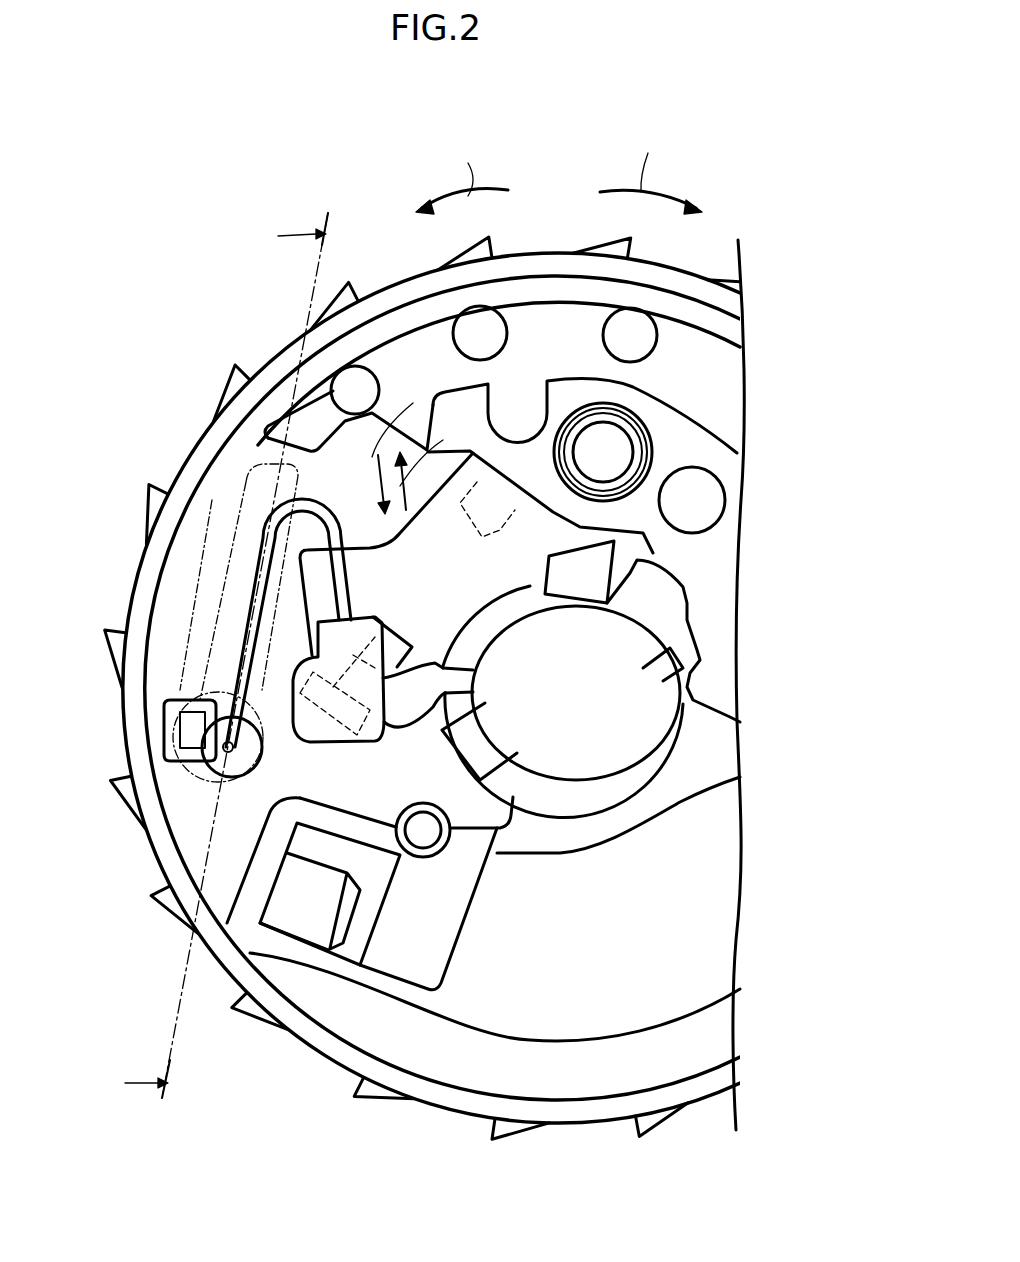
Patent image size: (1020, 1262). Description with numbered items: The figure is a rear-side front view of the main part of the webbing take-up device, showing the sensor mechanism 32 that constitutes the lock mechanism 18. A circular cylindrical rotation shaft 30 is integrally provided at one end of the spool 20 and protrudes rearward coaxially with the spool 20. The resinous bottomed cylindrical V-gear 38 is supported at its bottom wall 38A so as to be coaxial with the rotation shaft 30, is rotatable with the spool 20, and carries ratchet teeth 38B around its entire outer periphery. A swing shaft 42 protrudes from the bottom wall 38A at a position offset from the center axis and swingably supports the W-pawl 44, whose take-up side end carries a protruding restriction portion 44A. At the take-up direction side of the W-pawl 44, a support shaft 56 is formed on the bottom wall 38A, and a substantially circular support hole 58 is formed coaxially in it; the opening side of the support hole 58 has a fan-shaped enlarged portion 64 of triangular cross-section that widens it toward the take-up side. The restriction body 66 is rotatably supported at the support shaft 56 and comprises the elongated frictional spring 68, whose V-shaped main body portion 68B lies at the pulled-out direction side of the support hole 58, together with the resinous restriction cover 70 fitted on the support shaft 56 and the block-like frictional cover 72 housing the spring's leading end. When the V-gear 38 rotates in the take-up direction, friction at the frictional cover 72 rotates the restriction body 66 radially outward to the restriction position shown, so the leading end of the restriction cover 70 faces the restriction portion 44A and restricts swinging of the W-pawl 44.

The sensor mechanism 32 is at (450, 614).
The lock mechanism 18 is at (450, 614).
The rotation shaft 30 is at (553, 685).
The spool 20 is at (605, 739).
The V-gear 38 is at (436, 652).
The bottom wall 38A is at (232, 460).
The ratchet teeth 38B is at (352, 280).
The swing shaft 42 is at (617, 452).
The W-pawl 44 is at (476, 426).
The restriction portion 44A is at (277, 418).
The support shaft 56 is at (300, 746).
The support hole 58 is at (237, 750).
The enlarged portion 64 is at (237, 760).
The restriction body 66 is at (378, 608).
The frictional spring 68 is at (351, 601).
The main body portion 68B is at (352, 564).
The restriction cover 70 is at (197, 560).
The frictional cover 72 is at (420, 663).